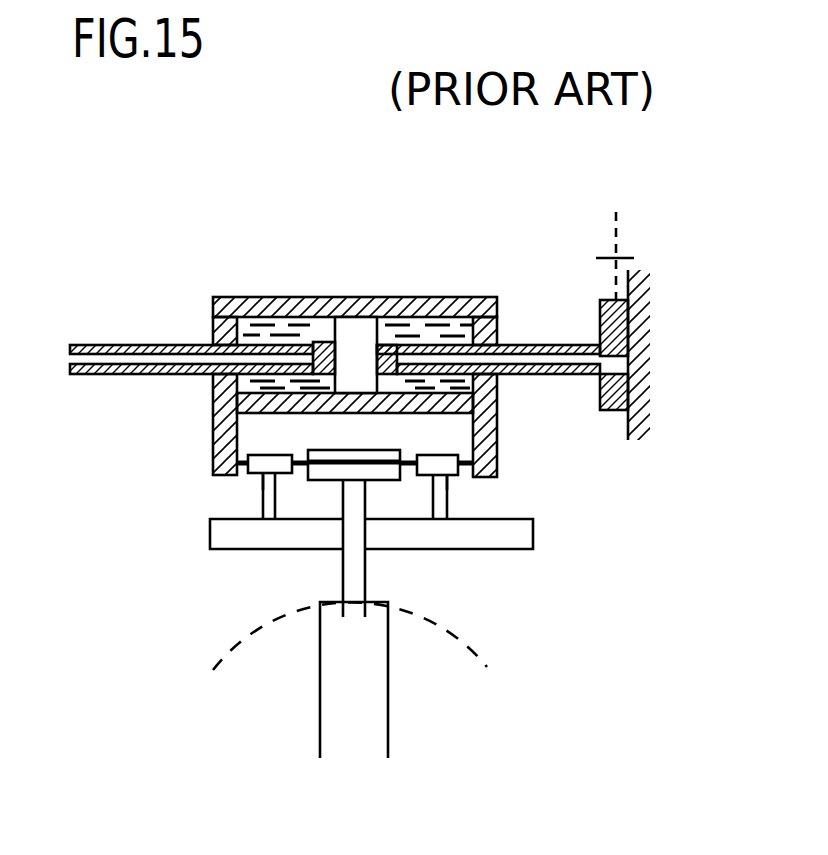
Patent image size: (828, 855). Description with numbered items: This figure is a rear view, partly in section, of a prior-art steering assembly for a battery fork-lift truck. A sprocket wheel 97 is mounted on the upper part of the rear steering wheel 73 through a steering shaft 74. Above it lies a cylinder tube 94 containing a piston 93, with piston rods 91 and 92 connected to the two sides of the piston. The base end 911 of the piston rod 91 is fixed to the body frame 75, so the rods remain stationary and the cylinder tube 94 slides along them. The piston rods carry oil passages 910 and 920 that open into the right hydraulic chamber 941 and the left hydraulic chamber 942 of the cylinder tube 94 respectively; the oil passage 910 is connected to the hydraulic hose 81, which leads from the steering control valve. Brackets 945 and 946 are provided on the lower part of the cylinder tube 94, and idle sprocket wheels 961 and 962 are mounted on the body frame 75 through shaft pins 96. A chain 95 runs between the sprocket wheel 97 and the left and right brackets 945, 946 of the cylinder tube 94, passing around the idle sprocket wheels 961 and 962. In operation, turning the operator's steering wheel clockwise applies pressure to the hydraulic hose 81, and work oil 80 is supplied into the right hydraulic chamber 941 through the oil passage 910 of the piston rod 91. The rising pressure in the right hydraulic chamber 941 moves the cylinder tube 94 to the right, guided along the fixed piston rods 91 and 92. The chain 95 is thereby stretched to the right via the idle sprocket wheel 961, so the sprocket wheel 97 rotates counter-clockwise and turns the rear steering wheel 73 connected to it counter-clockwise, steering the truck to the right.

The rear steering wheel 73 is at (355, 698).
The steering shaft 74 is at (355, 578).
The body frame 75 is at (632, 298).
The work oil 80 is at (253, 318).
The hydraulic hose 81 is at (614, 213).
The piston rod 91 is at (540, 377).
The oil passage 910 is at (560, 358).
The base end 911 is at (630, 388).
The piston rod 92 is at (131, 344).
The oil passage 920 is at (295, 358).
The piston 93 is at (347, 316).
The cylinder tube 94 is at (457, 323).
The right hydraulic chamber 941 is at (410, 327).
The left hydraulic chamber 942 is at (315, 325).
The bracket 945 is at (497, 455).
The bracket 946 is at (213, 462).
The chain 95 is at (237, 480).
The shaft pin 96 is at (265, 497).
The idle sprocket wheel 961 is at (437, 456).
The idle sprocket wheel 962 is at (270, 456).
The sprocket wheel 97 is at (384, 487).